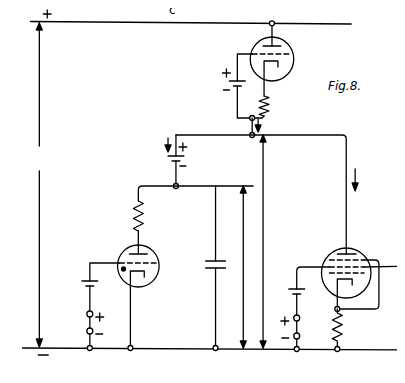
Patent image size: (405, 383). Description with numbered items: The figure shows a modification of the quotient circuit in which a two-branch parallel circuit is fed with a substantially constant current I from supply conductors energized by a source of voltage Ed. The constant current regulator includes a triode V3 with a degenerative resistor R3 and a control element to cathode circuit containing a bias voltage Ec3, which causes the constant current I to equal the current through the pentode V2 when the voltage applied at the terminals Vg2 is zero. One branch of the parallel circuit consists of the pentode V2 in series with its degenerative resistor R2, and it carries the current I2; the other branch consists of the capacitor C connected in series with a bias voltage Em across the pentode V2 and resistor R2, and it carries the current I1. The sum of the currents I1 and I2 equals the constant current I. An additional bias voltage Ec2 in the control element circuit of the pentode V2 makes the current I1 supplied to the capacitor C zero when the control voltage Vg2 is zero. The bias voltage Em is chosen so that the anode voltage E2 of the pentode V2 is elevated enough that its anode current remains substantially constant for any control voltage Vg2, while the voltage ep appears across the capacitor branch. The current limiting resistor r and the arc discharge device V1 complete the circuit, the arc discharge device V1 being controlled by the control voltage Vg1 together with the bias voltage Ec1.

The source of voltage Ed is at (43, 184).
The arc discharge device V1 is at (152, 253).
The pentode V2 is at (359, 252).
The triode V3 is at (286, 48).
The current limiting resistor r is at (145, 227).
The degenerative resistor R2 is at (344, 333).
The degenerative resistor R3 is at (270, 100).
The capacitor C is at (206, 264).
The bias voltage Ec1 is at (105, 307).
The bias voltage Ec2 is at (305, 309).
The bias voltage Ec3 is at (225, 86).
The bias voltage Em is at (200, 134).
The anode voltage E2 is at (266, 241).
The plate voltage ep is at (241, 267).
The substantially constant current value I is at (263, 124).
The current value I1 is at (163, 144).
The current value I2 is at (363, 183).
The control voltage Vg1 is at (126, 325).
The control voltage Vg2 is at (322, 329).